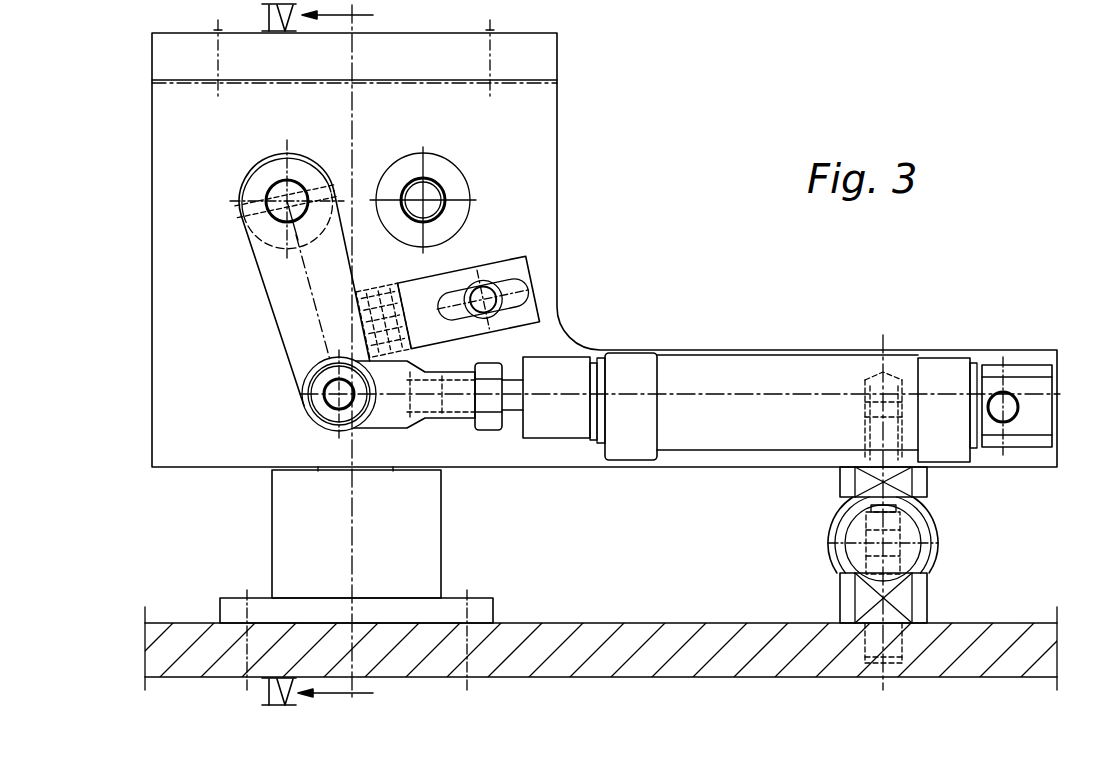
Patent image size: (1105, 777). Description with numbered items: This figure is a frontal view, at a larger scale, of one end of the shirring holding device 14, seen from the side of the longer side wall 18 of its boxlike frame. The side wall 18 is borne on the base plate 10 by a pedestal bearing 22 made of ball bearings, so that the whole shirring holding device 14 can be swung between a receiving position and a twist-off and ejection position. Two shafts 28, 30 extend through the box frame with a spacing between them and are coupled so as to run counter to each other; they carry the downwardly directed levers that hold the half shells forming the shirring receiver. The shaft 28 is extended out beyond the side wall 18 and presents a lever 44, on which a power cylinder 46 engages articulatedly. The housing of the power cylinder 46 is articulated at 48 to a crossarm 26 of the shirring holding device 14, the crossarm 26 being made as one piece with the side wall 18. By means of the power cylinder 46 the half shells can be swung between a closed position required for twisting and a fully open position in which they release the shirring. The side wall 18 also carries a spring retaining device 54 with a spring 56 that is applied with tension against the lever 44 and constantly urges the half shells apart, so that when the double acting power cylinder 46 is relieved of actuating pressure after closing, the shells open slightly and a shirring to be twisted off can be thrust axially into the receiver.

The base plate 10 is at (640, 633).
The shirring holding device 14 is at (140, 162).
The side wall 18 is at (172, 250).
The pedestal bearing 22 is at (427, 545).
The crossarm 26 is at (993, 458).
The shaft 28 is at (280, 188).
The shaft 30 is at (430, 193).
The lever 44 is at (293, 297).
The power cylinder 46 is at (703, 363).
The articulation point 48 is at (1013, 402).
The spring retaining device 54 is at (527, 284).
The spring 56 is at (357, 310).